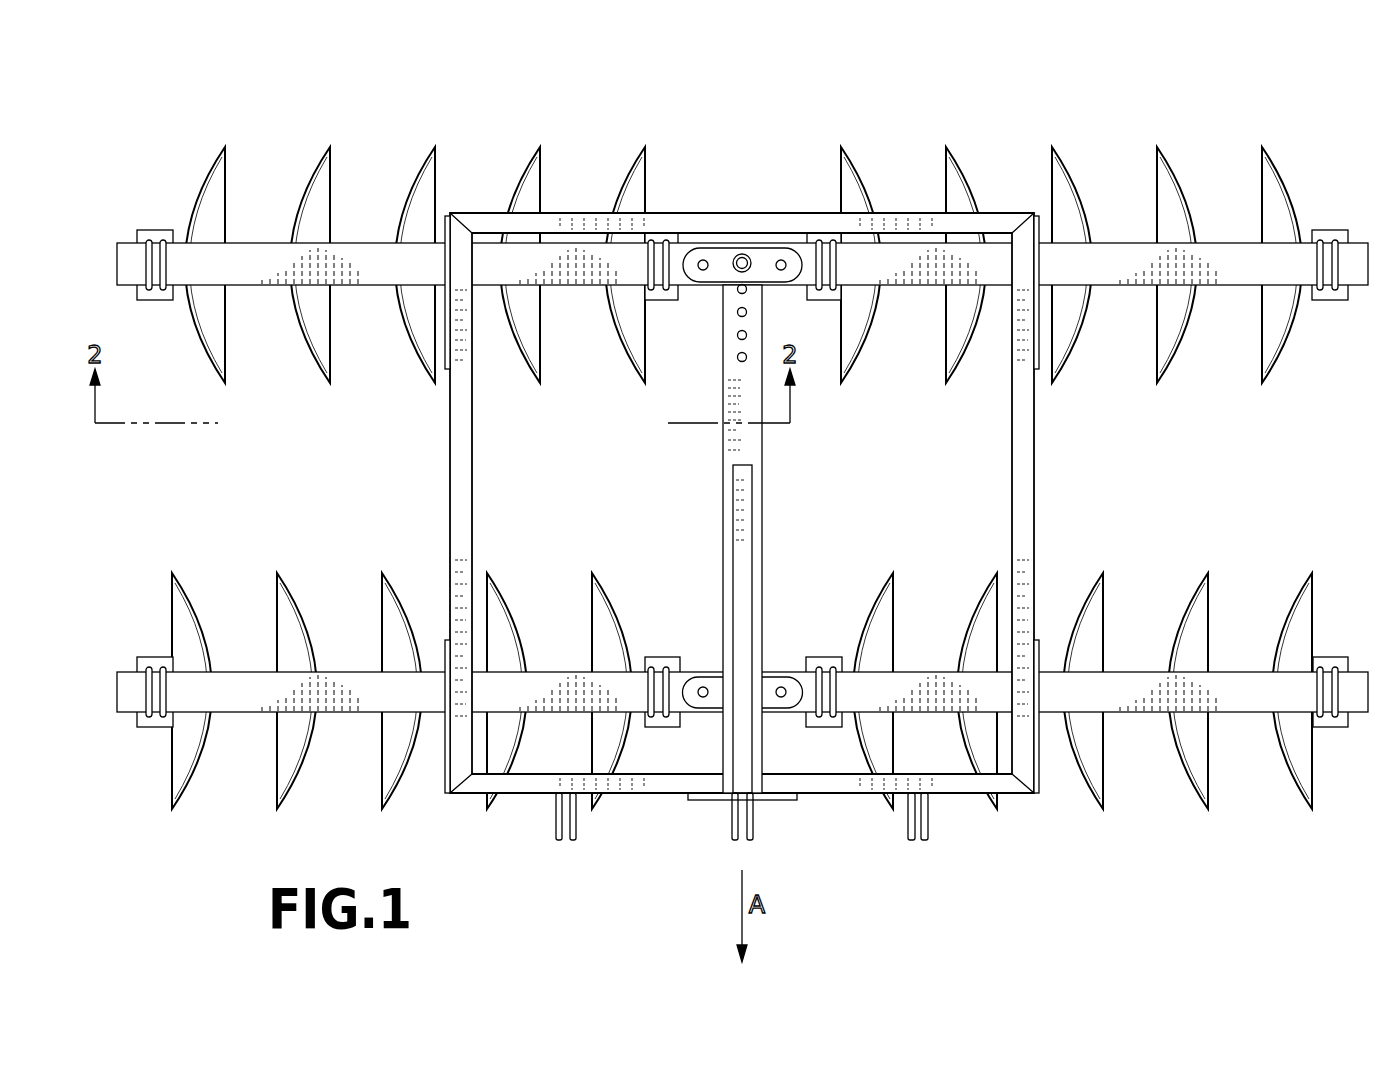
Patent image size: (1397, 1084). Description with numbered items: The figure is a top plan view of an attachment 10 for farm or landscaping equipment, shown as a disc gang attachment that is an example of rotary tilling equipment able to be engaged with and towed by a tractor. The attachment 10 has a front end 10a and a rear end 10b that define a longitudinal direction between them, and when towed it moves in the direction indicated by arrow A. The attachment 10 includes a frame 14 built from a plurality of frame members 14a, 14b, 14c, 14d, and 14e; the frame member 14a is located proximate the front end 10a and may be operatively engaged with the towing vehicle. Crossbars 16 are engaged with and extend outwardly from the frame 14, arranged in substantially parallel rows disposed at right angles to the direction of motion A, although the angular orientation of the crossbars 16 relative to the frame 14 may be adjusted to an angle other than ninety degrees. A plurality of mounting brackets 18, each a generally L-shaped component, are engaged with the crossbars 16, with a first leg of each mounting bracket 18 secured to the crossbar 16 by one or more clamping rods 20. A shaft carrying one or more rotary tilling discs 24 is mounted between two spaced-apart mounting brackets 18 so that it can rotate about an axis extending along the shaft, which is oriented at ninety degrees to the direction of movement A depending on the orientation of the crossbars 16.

The attachment 10 is at (710, 499).
The front end 10a is at (849, 855).
The rear end 10b is at (787, 141).
The frame 14 is at (753, 509).
The frame member 14a is at (657, 790).
The frame member 14b is at (703, 220).
The frame member 14c is at (460, 540).
The frame member 14d is at (1025, 430).
The frame member 14e is at (752, 448).
The crossbar 16 is at (372, 256).
The mounting bracket 18 is at (704, 445).
The clamping rod 20 is at (146, 262).
The rotary tilling disc 24 is at (197, 192).